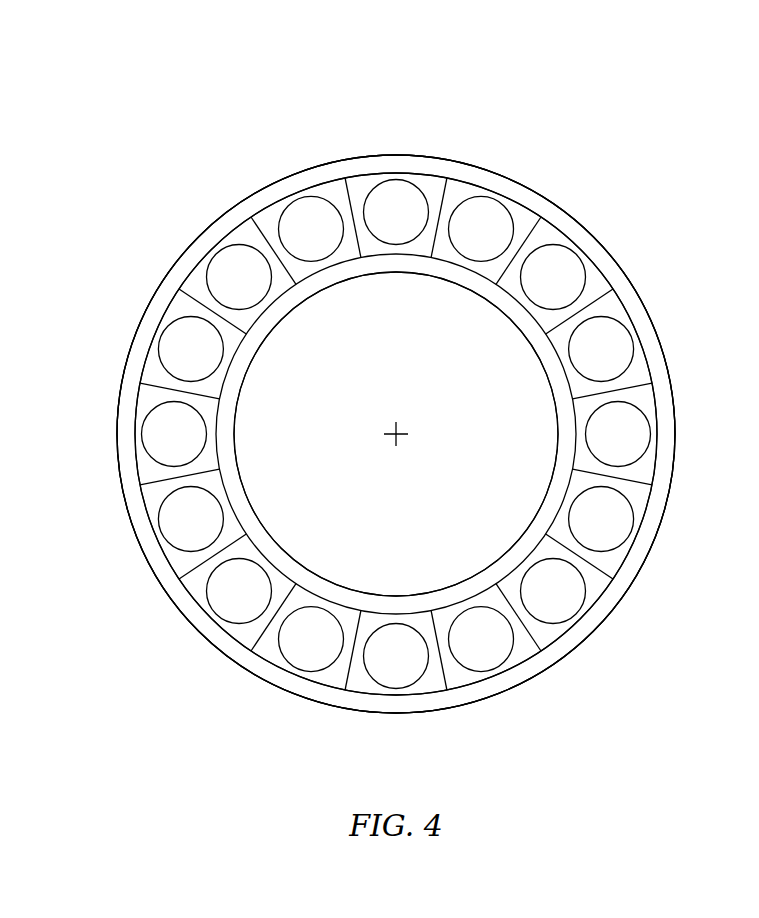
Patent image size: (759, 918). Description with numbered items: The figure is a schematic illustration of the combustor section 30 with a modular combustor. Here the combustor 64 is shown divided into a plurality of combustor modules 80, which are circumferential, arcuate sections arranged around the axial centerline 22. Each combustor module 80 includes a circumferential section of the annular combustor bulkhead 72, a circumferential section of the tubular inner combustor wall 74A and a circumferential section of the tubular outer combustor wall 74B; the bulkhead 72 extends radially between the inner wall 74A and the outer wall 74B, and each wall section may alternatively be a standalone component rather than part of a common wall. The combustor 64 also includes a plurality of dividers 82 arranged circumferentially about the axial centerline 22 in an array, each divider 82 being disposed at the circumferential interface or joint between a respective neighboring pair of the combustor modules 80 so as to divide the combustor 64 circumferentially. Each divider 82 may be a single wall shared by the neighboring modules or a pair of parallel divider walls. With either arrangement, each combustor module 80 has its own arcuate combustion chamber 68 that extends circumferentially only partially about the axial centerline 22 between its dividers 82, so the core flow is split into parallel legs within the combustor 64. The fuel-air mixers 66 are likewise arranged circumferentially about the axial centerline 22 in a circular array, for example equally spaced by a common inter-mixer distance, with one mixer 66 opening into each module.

The combustor section 30 is at (580, 108).
The combustor module 80 is at (480, 160).
The combustor 64 is at (610, 238).
The outer combustor wall 74B is at (658, 332).
The combustor bulkhead 72 is at (608, 303).
The divider 82 is at (440, 243).
The fuel-air mixer 66 is at (310, 197).
The combustion chamber 68 is at (210, 390).
The inner combustor wall 74A is at (547, 373).
The axial centerline 22 is at (395, 437).